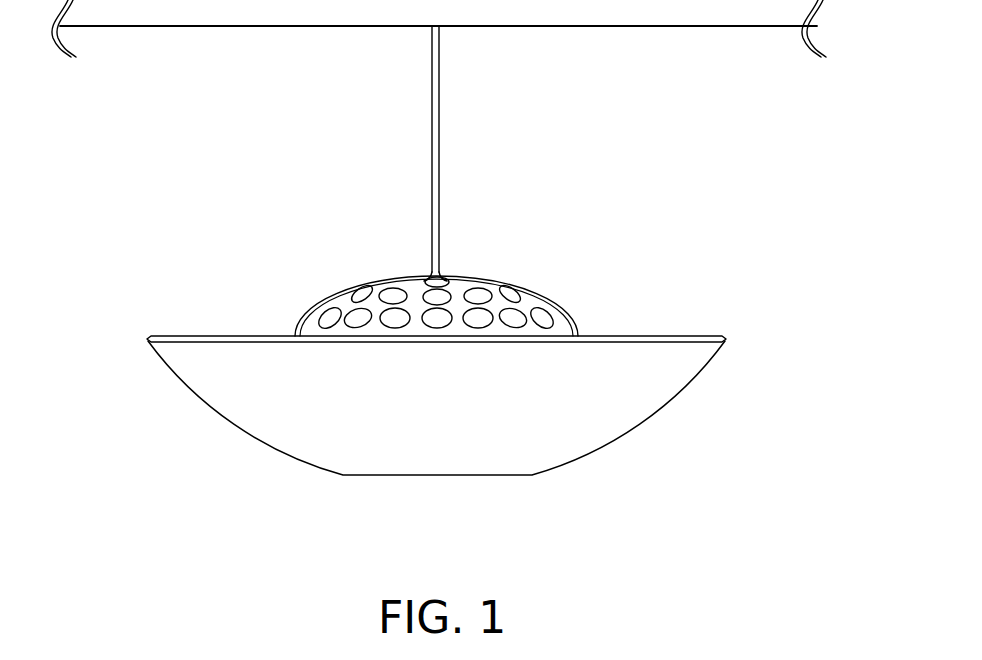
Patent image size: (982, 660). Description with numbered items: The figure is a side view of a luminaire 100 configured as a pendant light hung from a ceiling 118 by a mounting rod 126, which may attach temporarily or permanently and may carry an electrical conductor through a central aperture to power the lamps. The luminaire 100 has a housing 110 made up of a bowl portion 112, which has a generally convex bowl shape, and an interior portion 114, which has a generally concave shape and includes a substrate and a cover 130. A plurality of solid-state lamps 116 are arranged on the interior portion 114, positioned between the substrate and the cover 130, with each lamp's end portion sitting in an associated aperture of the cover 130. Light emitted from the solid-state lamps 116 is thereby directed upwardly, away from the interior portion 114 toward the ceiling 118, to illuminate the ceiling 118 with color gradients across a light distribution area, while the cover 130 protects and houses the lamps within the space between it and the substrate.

The luminaire 100 is at (149, 161).
The housing 110 is at (171, 315).
The bowl portion 112 is at (227, 420).
The interior portion 114 is at (332, 294).
The solid-state lamps 116 is at (387, 296).
The ceiling 118 is at (680, 26).
The mounting rod 126 is at (430, 114).
The cover 130 is at (452, 275).